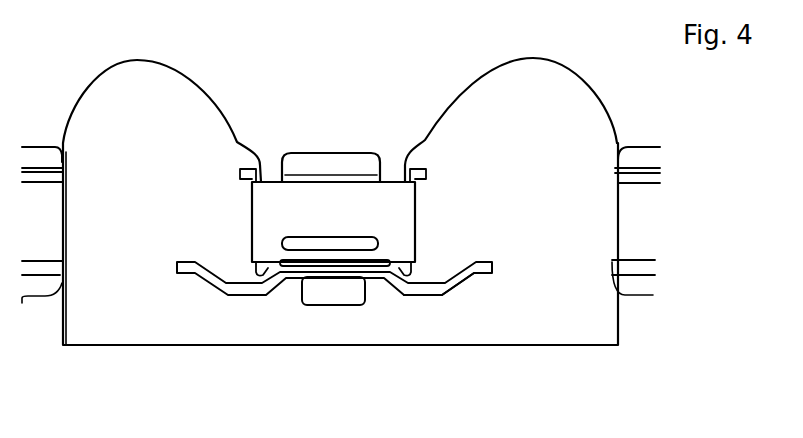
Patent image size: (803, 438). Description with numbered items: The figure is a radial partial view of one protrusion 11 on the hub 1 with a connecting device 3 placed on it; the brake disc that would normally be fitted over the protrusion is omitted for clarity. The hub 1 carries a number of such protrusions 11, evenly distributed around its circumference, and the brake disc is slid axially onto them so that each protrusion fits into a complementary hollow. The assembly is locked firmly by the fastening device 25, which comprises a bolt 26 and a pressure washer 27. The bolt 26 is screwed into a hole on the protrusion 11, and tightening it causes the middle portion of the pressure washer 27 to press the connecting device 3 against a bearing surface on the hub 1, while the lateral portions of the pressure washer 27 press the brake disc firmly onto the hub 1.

The hub 1 is at (357, 66).
The connecting device 3 is at (402, 231).
The protrusion 11 is at (382, 334).
The fastening means 25 is at (498, 292).
The bolt 26 is at (337, 291).
The pressure washer 27 is at (420, 289).